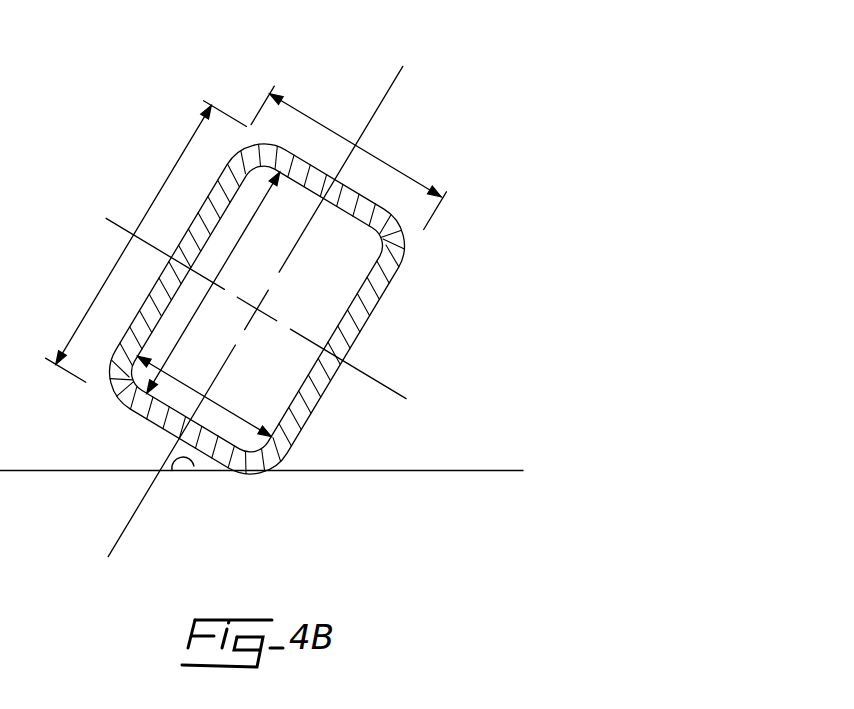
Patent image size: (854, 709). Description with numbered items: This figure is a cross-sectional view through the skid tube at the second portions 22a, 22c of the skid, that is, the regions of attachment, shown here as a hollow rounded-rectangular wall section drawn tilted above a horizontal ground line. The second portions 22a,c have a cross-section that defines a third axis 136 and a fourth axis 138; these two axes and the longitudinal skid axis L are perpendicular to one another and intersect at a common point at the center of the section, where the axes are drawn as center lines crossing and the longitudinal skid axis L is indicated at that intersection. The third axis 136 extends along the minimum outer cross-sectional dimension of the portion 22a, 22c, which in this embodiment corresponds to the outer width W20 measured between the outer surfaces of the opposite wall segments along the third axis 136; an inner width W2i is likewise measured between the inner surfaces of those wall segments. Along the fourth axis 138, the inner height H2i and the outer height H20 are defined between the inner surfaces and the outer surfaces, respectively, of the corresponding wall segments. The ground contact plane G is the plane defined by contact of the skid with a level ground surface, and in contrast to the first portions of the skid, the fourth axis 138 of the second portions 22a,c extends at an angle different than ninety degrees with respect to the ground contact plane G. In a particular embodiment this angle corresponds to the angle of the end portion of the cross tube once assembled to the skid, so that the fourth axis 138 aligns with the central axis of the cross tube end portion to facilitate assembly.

The second portions of the skid 22a,c is at (348, 309).
The second portion of the skid 22a is at (348, 309).
The second portion of the skid 22c is at (460, 268).
The fourth axis 138 is at (407, 78).
The third axis 136 is at (392, 390).
The longitudinal skid axis L is at (259, 309).
The ground contact plane G is at (498, 470).
The outer height H20 is at (173, 168).
The outer width W20 is at (307, 116).
The inner height H2i is at (213, 282).
The inner width W2i is at (226, 405).